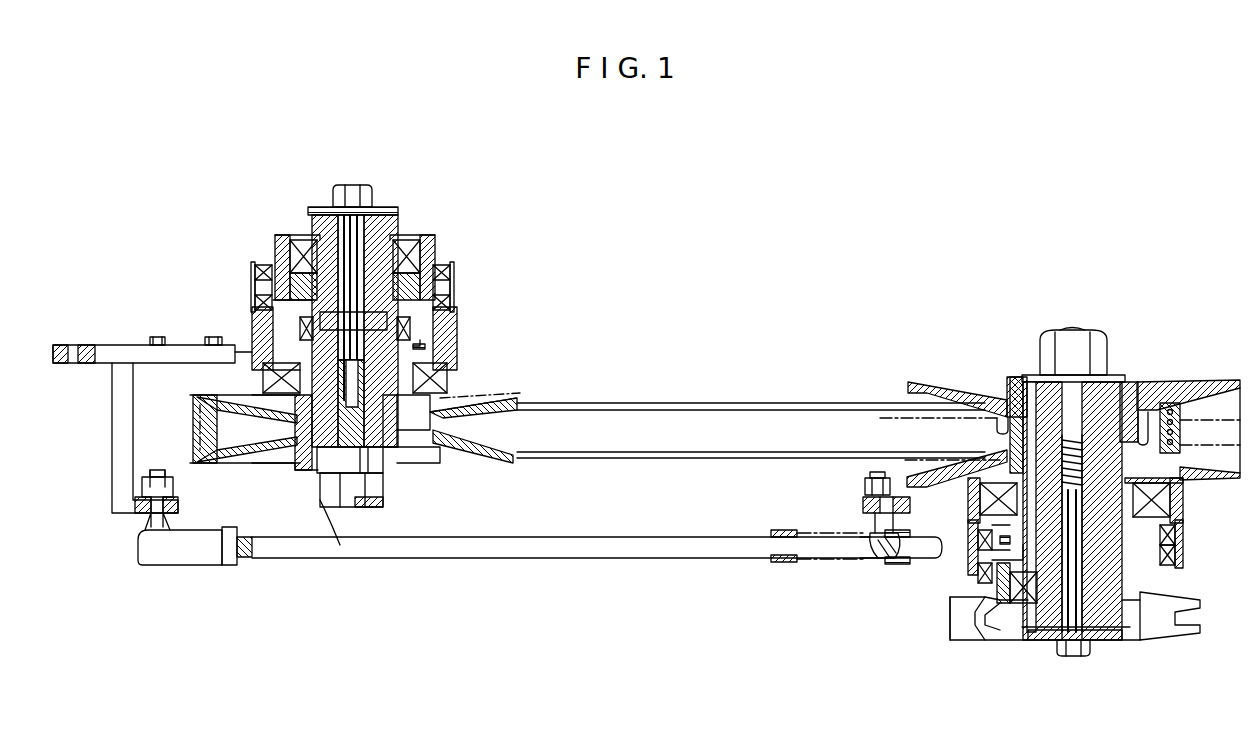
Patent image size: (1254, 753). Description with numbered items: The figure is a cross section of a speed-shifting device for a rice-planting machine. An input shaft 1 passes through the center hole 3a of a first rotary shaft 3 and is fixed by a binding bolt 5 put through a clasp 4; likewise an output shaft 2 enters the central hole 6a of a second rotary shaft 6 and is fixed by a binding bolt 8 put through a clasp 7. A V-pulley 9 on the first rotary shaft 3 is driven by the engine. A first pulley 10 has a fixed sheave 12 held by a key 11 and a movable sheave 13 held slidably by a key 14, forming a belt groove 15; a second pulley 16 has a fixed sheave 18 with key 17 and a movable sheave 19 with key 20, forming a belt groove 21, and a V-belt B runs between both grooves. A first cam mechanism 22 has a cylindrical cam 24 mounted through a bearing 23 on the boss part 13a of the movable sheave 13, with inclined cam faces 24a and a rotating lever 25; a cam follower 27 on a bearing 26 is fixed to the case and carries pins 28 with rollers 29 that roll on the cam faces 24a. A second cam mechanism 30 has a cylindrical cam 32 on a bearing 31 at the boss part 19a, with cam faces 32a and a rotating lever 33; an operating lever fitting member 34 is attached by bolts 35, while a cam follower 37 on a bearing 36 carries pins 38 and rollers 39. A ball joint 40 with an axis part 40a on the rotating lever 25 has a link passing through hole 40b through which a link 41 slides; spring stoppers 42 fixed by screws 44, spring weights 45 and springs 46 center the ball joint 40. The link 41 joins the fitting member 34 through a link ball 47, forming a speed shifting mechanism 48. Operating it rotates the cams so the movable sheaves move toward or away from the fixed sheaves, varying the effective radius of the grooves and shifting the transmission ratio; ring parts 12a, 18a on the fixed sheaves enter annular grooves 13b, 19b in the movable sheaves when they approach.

The input shaft 1 is at (1035, 345).
The output shaft 2 is at (372, 510).
The first rotary shaft 3 is at (1040, 635).
The center hole 3a is at (1035, 385).
The clasp 4 is at (1052, 640).
The binding bolt 5 is at (1080, 656).
The second rotary shaft 6 is at (340, 215).
The central hole 6a is at (340, 510).
The clasp 7 is at (375, 210).
The binding bolt 8 is at (352, 183).
The V-pulley 9 is at (962, 640).
The first pulley 10 is at (910, 382).
The key 11 is at (1015, 380).
The fixed sheave 12 is at (920, 383).
The ring part 12a is at (1143, 412).
The movable sheave 13 is at (915, 463).
The boss part 13a is at (1173, 500).
The annular groove 13b is at (995, 425).
The key 14 is at (1065, 440).
The belt groove 15 is at (905, 398).
The second pulley 16 is at (540, 403).
The key 17 is at (300, 472).
The fixed sheave 18 is at (500, 465).
The ring part 18a is at (455, 422).
The movable sheave 19 is at (510, 395).
The boss part 19a is at (415, 350).
The annular groove 19b is at (470, 380).
The key 20 is at (350, 460).
The belt groove 21 is at (520, 460).
The first cam mechanism 22 is at (975, 568).
The bearing 23 is at (1180, 515).
The cylindrical cam 24 is at (1178, 530).
The inclined cam faces 24a is at (1178, 553).
The rotating lever 25 is at (862, 500).
The bearing 26 is at (1012, 605).
The cam follower 27 is at (975, 622).
The pins 28 is at (1180, 562).
The roller 29 is at (1180, 615).
The second cam mechanism 30 is at (243, 275).
The bearing 31 is at (250, 352).
The cylindrical cam 32 is at (250, 330).
The inclined cam faces 32a is at (250, 335).
The rotating lever 33 is at (165, 370).
The operating lever fitting member 34 is at (105, 345).
The bolts 35 is at (157, 337).
The bearing 36 is at (300, 240).
The cam follower 37 is at (410, 240).
The pins 38 is at (252, 275).
The roller 39 is at (262, 265).
The ball joint 40 is at (880, 560).
The axis part 40a is at (870, 525).
The link passing through hole 40b is at (865, 565).
The link 41 is at (600, 560).
The spring stoppers 42 is at (770, 533).
The screws 44 is at (780, 530).
The spring weights 45 is at (880, 562).
The spring 46 is at (905, 530).
The link ball 47 is at (190, 565).
The speed shifting mechanism 48 is at (640, 615).
The V-belt B is at (192, 452).